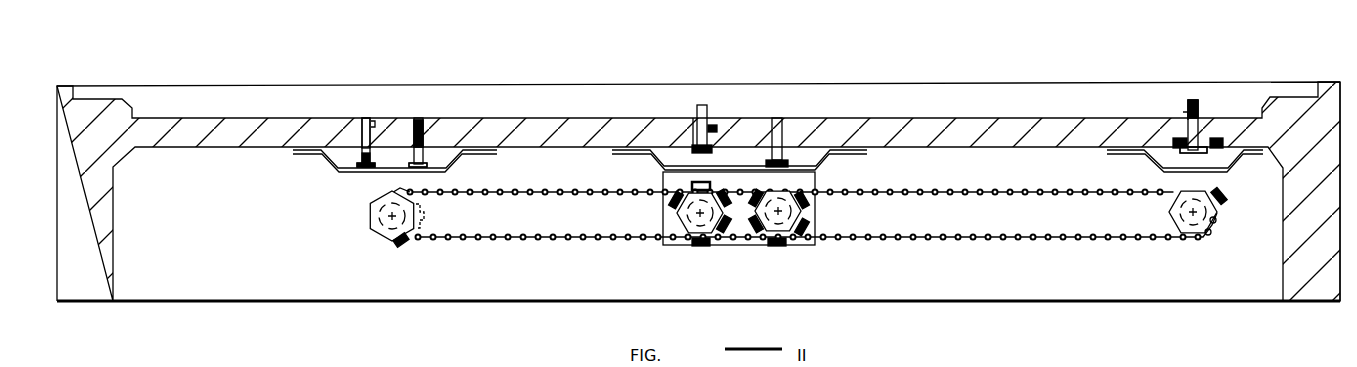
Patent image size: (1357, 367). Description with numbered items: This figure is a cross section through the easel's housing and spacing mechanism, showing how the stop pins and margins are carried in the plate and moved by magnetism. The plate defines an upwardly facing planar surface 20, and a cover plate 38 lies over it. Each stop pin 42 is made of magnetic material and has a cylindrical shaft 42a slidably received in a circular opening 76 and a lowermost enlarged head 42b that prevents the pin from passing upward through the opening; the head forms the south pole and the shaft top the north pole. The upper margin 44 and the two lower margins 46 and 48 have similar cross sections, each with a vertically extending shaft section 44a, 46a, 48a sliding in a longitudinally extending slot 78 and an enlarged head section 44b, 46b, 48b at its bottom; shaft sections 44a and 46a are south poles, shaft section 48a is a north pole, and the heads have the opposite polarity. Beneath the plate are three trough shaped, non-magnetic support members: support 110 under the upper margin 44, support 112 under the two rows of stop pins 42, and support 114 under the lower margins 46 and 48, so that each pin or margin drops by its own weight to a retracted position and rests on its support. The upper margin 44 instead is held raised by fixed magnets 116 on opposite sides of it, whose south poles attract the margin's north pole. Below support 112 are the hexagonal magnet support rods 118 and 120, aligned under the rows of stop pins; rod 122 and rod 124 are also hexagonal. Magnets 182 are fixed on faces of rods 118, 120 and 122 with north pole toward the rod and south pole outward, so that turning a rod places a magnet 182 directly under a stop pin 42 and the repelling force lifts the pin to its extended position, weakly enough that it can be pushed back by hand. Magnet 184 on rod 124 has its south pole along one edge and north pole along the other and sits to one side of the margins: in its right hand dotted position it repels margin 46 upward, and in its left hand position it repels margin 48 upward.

The planar surface 20 is at (910, 118).
The cover plate 38 is at (75, 92).
The stop pin 42 is at (718, 127).
The cylindrical shaft 42a is at (703, 105).
The enlarged head 42b is at (690, 153).
The upper margin 44 is at (1203, 114).
The shaft section 44a is at (1193, 98).
The enlarged head section 44b is at (1183, 150).
The lower margin 46 is at (427, 130).
The shaft section 46a is at (418, 120).
The enlarged head section 46b is at (426, 172).
The lower margin 48 is at (358, 128).
The shaft section 48a is at (366, 152).
The enlarged head section 48b is at (364, 168).
The circular opening 76 is at (695, 145).
The longitudinally extending slot 78 is at (375, 125).
The support member 110 is at (1117, 153).
The support member 112 is at (827, 162).
The support member 114 is at (327, 164).
The fixed magnet 116 is at (1165, 140).
The magnet support rod 118 is at (688, 223).
The magnet support rod 120 is at (787, 213).
The magnet support rod 122 is at (1177, 212).
The magnet support rod 124 is at (393, 220).
The magnet 182 is at (700, 247).
The magnet 184 is at (405, 246).